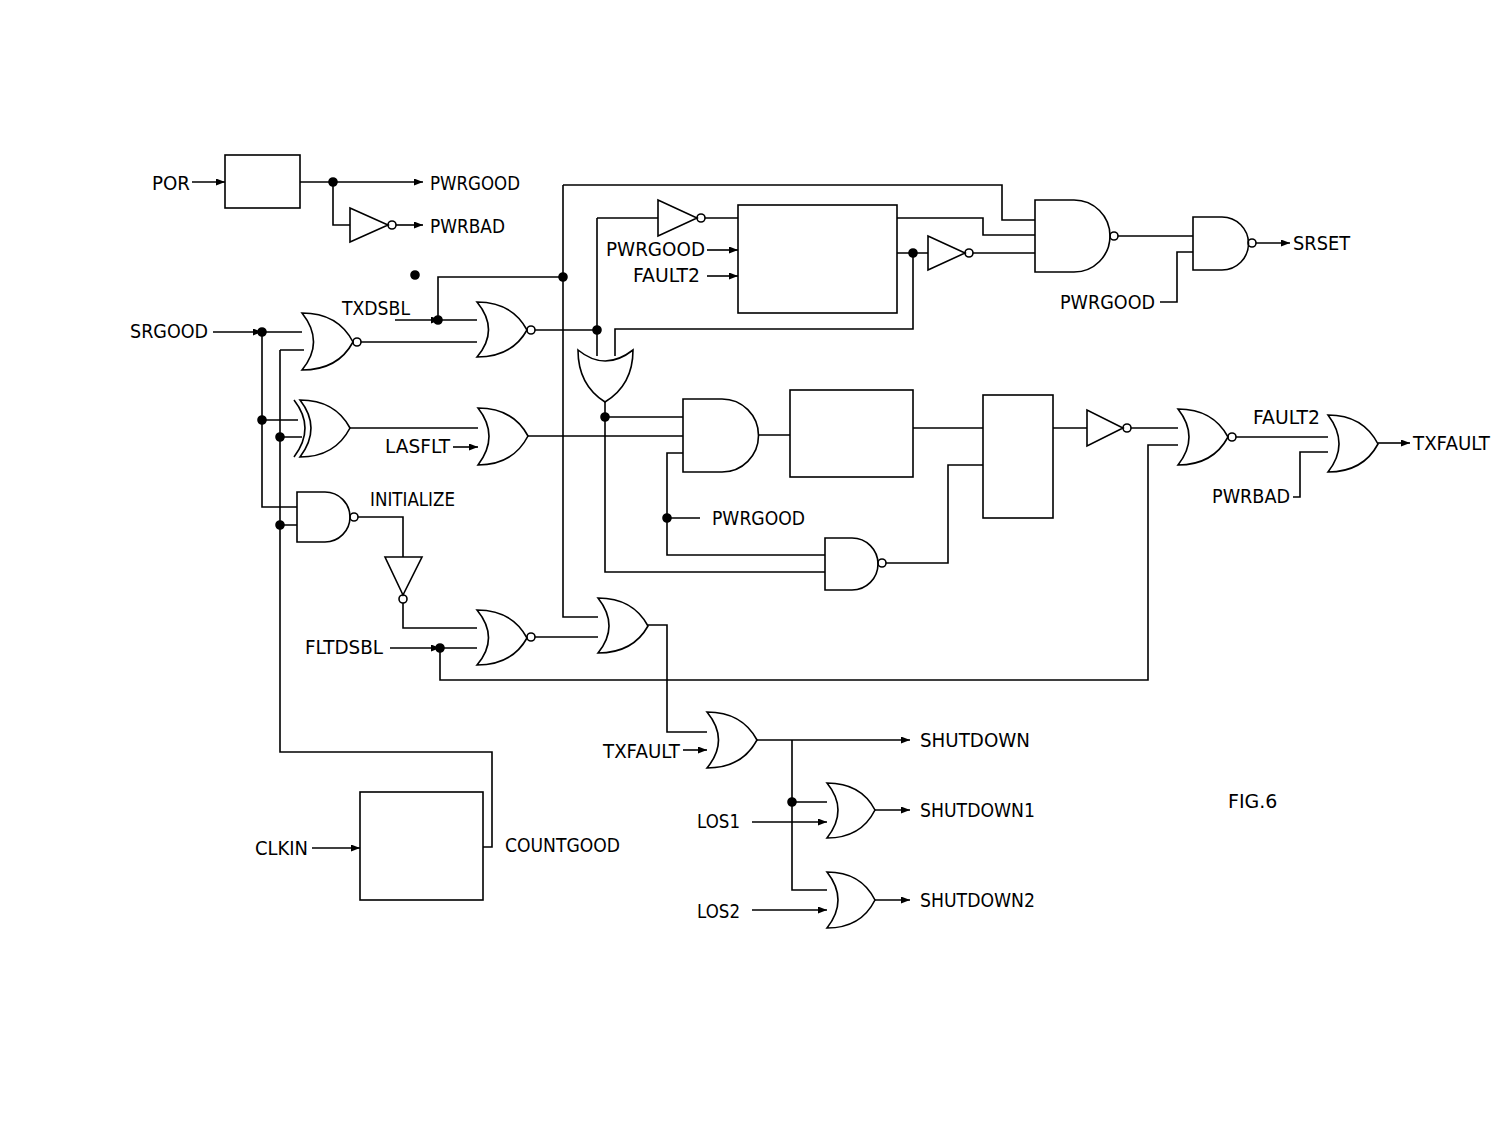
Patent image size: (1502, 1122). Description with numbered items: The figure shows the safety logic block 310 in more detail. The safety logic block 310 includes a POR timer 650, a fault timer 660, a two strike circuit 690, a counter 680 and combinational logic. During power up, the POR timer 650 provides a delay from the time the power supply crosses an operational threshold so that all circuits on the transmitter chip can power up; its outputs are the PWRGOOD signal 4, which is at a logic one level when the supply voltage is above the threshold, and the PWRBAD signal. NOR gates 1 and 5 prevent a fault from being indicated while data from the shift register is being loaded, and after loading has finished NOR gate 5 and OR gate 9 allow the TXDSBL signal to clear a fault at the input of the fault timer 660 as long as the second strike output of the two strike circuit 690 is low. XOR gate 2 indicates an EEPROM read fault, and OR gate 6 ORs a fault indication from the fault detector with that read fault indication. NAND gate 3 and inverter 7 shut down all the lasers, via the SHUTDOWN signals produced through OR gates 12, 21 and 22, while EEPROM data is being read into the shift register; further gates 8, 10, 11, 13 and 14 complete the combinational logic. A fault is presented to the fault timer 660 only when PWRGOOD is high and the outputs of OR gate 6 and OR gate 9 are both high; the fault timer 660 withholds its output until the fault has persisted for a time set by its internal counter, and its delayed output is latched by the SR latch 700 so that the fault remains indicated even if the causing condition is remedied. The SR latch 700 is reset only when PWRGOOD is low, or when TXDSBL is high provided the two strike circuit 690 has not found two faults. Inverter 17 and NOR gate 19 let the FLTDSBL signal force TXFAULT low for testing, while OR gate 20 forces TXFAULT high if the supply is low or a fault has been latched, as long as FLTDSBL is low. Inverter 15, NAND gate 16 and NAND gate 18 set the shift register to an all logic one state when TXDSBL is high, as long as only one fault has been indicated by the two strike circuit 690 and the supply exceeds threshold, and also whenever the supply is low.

The safety logic block 310 is at (579, 124).
The POR timer 650 is at (283, 155).
The two strike circuit 690 is at (818, 205).
The fault timer 660 is at (850, 390).
The SR latch 700 is at (1010, 395).
The counter 680 is at (390, 900).
The NOR gate 1 is at (331, 341).
The XOR gate 2 is at (322, 428).
The NAND gate 3 is at (327, 517).
The PWRGOOD signal 4 is at (373, 218).
The NOR gate 5 is at (449, 309).
The OR gate 6 is at (503, 436).
The inverter 7 is at (403, 580).
The NOR gate 8 is at (506, 637).
The OR gate 9 is at (605, 376).
The OR gate 10 is at (623, 625).
The AND gate 11 is at (720, 435).
The OR gate 12 is at (672, 740).
The inverter 13 is at (681, 218).
The NAND gate 14 is at (855, 564).
The inverter 15 is at (950, 253).
The NAND gate 16 is at (1076, 236).
The inverter 17 is at (1109, 428).
The NAND gate 18 is at (1224, 243).
The NOR gate 19 is at (1207, 437).
The OR gate 20 is at (1353, 443).
The OR gate 21 is at (851, 810).
The OR gate 22 is at (851, 900).